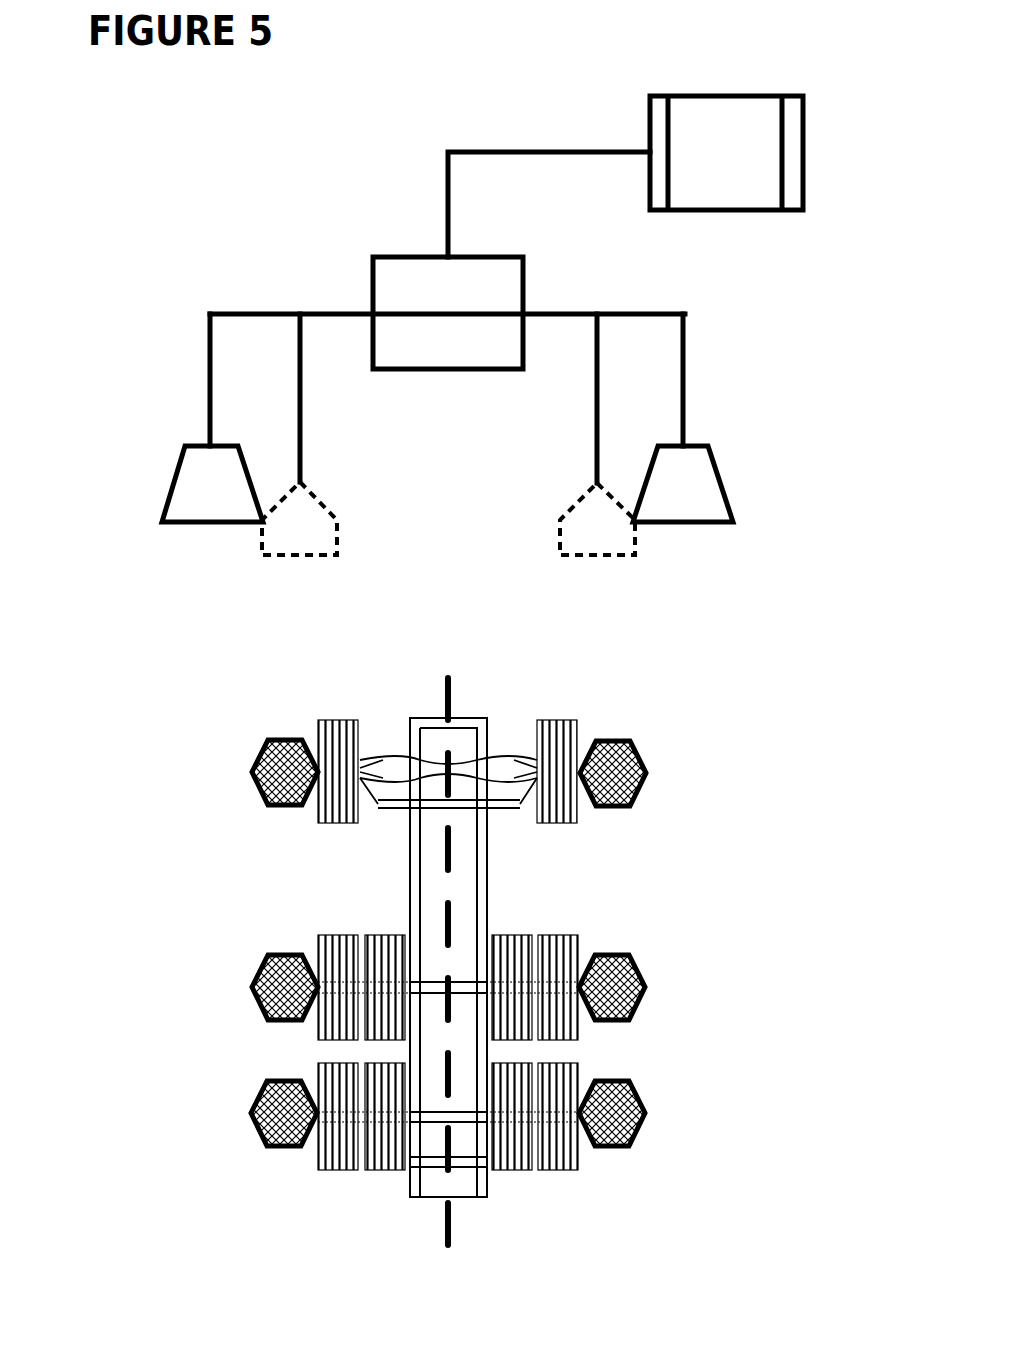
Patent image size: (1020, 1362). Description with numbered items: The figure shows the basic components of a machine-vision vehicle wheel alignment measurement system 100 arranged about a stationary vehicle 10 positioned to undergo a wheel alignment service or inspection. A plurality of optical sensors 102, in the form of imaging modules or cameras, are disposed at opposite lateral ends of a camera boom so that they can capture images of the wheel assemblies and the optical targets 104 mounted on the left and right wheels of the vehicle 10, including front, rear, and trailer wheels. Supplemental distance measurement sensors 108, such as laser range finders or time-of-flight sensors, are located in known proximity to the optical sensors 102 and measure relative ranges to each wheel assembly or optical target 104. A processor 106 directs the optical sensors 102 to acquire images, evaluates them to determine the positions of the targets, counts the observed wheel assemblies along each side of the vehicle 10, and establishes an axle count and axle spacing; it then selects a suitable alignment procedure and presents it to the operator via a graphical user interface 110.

The vehicle 10 is at (537, 862).
The machine-vision vehicle wheel alignment measurement system 100 is at (212, 170).
The optical sensors 102 is at (160, 478).
The optical targets 104 is at (255, 760).
The processor 106 is at (388, 253).
The supplemental distance measurement sensors 108 is at (328, 492).
The graphical user interface 110 is at (688, 92).